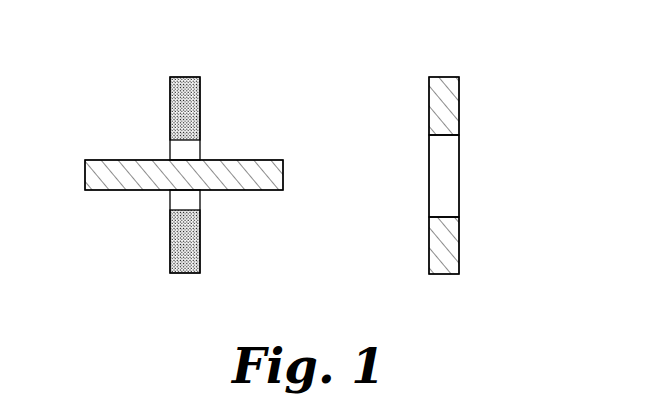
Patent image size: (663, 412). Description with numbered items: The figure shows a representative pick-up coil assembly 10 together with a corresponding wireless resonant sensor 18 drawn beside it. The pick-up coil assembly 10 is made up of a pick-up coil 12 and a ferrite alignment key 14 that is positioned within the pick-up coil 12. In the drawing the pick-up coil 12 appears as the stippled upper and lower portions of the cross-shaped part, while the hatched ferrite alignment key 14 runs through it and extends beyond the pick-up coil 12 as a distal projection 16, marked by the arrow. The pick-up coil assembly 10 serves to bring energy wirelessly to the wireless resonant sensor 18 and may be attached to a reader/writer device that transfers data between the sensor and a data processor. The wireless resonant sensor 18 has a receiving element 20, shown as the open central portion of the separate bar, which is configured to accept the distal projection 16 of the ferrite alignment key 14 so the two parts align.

The pick-up coil assembly 10 is at (206, 204).
The pick-up coil 12 is at (170, 80).
The ferrite alignment key 14 is at (86, 160).
The distal projection 16 is at (303, 178).
The wireless resonant sensor 18 is at (429, 90).
The receiving element 20 is at (444, 173).